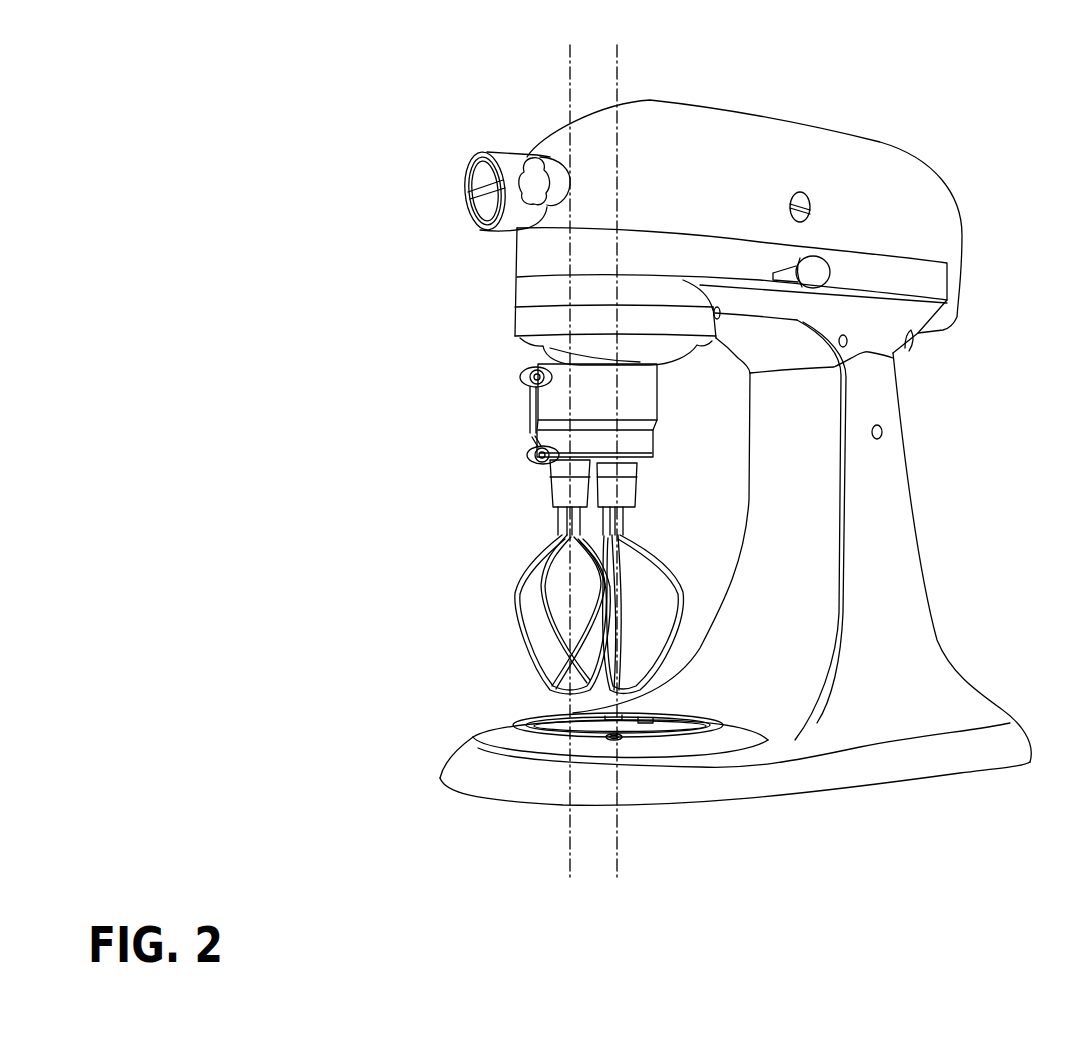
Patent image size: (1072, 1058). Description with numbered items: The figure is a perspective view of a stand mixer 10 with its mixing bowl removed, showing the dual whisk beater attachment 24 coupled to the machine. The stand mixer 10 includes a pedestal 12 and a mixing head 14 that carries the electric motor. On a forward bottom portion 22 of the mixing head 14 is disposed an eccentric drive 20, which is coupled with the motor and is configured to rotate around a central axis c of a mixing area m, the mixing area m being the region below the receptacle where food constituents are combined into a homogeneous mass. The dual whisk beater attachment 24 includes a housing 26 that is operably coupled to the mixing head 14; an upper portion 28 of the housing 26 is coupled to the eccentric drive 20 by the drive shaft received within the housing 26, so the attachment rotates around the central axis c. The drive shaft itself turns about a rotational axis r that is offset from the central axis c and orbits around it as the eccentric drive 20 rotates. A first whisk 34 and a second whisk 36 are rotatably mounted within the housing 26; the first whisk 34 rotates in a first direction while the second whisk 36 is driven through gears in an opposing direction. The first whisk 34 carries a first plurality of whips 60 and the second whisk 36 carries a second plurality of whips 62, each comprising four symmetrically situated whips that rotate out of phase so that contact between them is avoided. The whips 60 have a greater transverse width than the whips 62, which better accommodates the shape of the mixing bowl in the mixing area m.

The stand mixer 10 is at (982, 121).
The pedestal 12 is at (884, 533).
The mixing head 14 is at (877, 157).
The eccentric drive 20 is at (667, 350).
The forward bottom portion 22 is at (537, 307).
The dual whisk beater attachment 24 is at (522, 403).
The housing 26 is at (537, 445).
The upper portion 28 is at (597, 372).
The first whisk 34 is at (557, 488).
The second whisk 36 is at (627, 488).
The first plurality of whips 60 is at (517, 605).
The second plurality of whips 62 is at (685, 585).
The mixing area m is at (630, 737).
The rotational axis r is at (570, 474).
The central axis c is at (614, 474).